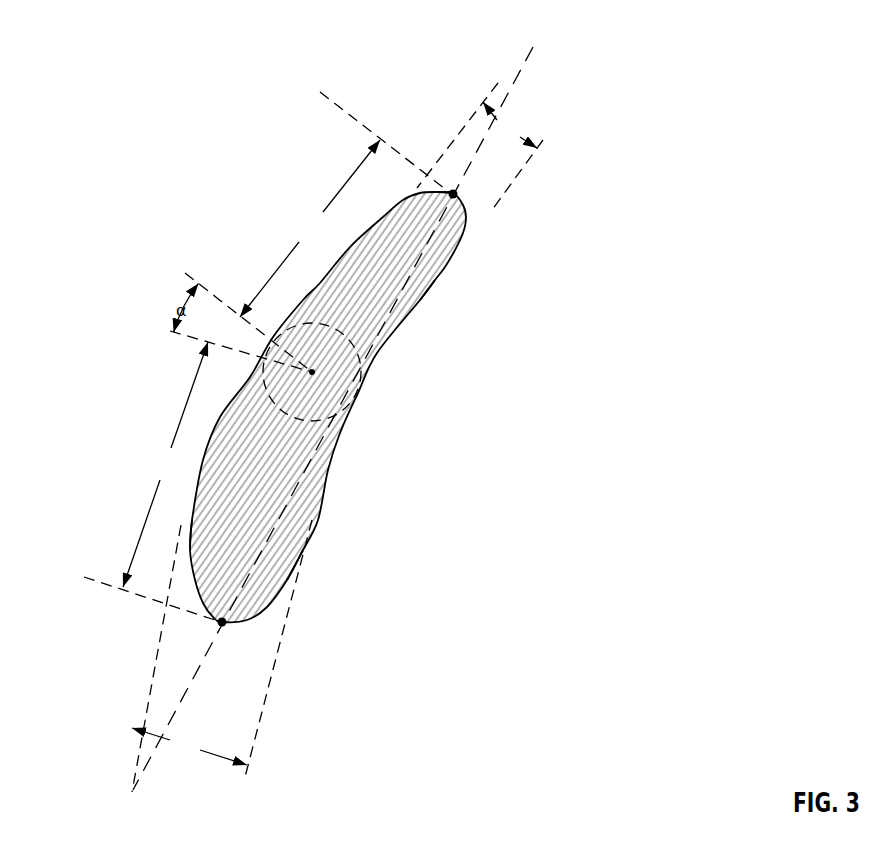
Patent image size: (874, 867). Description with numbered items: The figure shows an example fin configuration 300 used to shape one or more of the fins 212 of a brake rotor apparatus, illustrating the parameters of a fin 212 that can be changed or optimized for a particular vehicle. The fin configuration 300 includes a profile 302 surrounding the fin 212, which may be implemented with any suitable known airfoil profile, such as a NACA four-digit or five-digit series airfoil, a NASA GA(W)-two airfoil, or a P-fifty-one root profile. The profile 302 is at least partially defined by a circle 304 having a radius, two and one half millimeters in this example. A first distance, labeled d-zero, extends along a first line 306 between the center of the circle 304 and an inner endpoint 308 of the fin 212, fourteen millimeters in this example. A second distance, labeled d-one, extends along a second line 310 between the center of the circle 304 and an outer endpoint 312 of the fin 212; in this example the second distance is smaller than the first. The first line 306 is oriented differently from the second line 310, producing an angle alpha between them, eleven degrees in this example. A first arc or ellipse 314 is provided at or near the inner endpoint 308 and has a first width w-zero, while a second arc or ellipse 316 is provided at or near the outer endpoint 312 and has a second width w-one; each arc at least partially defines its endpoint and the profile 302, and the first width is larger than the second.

The fin configuration 300 is at (668, 66).
The profile 302 is at (286, 578).
The circle 304 is at (337, 332).
The first line 306 is at (148, 518).
The inner endpoint 308 is at (224, 626).
The second line 310 is at (341, 187).
The outer endpoint 312 is at (456, 196).
The first arc and/or ellipse 314 is at (258, 614).
The second arc and/or ellipse 316 is at (466, 214).
The fin 212 is at (217, 417).